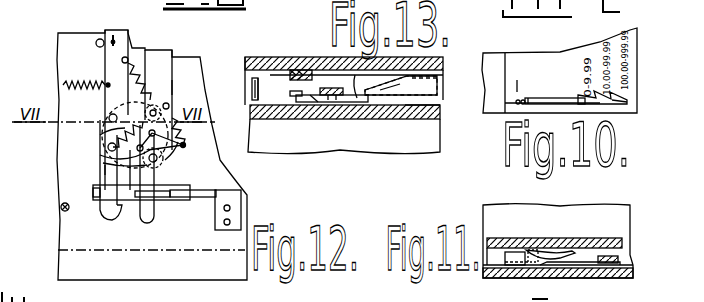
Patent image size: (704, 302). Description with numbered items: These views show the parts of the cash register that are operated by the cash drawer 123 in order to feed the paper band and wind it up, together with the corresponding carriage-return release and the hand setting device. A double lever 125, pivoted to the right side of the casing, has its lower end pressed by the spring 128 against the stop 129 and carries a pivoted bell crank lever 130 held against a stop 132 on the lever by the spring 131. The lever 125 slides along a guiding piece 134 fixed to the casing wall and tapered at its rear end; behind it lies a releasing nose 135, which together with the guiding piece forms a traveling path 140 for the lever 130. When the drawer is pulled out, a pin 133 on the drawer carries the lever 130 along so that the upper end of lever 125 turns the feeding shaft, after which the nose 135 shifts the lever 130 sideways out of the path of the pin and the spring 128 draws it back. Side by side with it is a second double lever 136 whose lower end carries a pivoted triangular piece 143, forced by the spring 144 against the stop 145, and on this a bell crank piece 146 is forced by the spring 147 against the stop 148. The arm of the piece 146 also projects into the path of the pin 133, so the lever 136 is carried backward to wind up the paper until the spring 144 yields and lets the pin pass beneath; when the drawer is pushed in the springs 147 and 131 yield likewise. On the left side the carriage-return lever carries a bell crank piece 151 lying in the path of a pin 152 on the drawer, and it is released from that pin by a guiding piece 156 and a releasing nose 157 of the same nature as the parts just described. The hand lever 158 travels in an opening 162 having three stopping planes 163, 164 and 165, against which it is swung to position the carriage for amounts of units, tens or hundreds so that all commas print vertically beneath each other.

In FIG. 13, the cash drawer 123 is at (405, 110).
In FIG. 12, the double lever 125 is at (110, 34).
In FIG. 13, the double lever 125 is at (290, 70).
In FIG. 12, the spring 128 is at (66, 84).
In FIG. 12, the stop 129 is at (81, 43).
In FIG. 12, the bell crank lever 130 is at (108, 178).
In FIG. 13, the bell crank lever 130 is at (273, 91).
In FIG. 12, the spring 131 is at (173, 88).
In FIG. 12, the stop 132 is at (110, 116).
In FIG. 12, the pin 133 is at (68, 213).
In FIG. 13, the pin 133 is at (256, 78).
In FIG. 12, the guiding piece 134 is at (140, 195).
In FIG. 13, the guiding piece 134 is at (356, 100).
In FIG. 12, the releasing nose 135 is at (205, 191).
In FIG. 13, the releasing nose 135 is at (398, 86).
In FIG. 12, the second double lever 136 is at (168, 78).
In FIG. 13, the second double lever 136 is at (318, 100).
In FIG. 13, the traveling path 140 is at (373, 82).
In FIG. 12, the triangular piece 143 is at (103, 163).
In FIG. 13, the triangular piece 143 is at (296, 100).
In FIG. 12, the spring 144 is at (110, 145).
In FIG. 12, the stop 145 is at (183, 158).
In FIG. 12, the bell crank piece 146 is at (192, 185).
In FIG. 13, the bell crank piece 146 is at (334, 102).
In FIG. 12, the spring 147 is at (194, 136).
In FIG. 12, the stop 148 is at (117, 176).
In FIG. 11, the bell crank piece 151 is at (608, 256).
In FIG. 11, the pin 152 is at (530, 250).
In FIG. 11, the guiding piece 156 is at (572, 262).
In FIG. 11, the releasing nose 157 is at (548, 254).
In FIG. 10, the lever 158 is at (513, 81).
In FIG. 10, the opening 162 is at (528, 98).
In FIG. 10, the stopping plane 163 is at (555, 92).
In FIG. 10, the stopping plane 164 is at (590, 95).
In FIG. 10, the stopping plane 165 is at (628, 101).